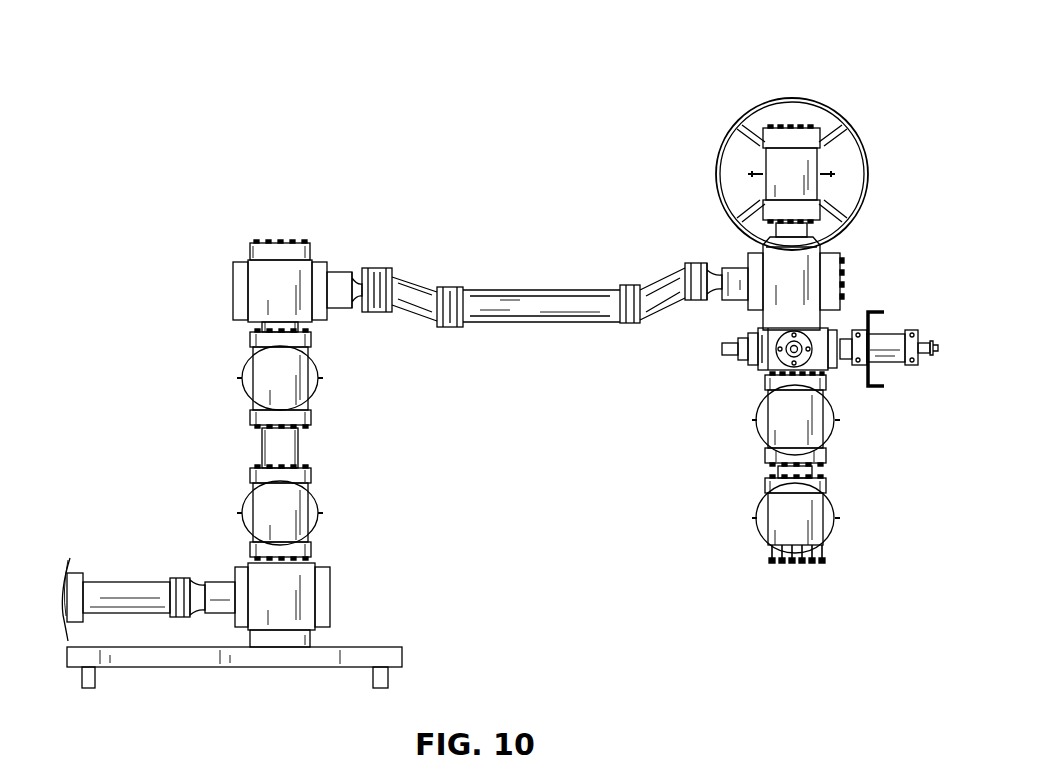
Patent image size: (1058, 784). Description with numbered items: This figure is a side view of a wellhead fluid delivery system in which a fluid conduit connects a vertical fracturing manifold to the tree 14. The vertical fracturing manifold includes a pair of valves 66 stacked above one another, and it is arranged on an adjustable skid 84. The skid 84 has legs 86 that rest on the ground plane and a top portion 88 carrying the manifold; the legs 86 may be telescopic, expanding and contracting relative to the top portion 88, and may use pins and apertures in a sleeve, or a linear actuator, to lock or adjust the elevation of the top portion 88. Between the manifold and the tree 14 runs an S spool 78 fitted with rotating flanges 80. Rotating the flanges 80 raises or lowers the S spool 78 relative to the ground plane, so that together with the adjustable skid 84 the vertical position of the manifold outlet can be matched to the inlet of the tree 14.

The tree 14 is at (843, 48).
The valve 66 is at (312, 350).
The "S" spool 78 is at (540, 239).
The rotating flanges 80 is at (376, 268).
The skid 84 is at (374, 646).
The legs 86 is at (96, 680).
The top portion 88 is at (158, 646).